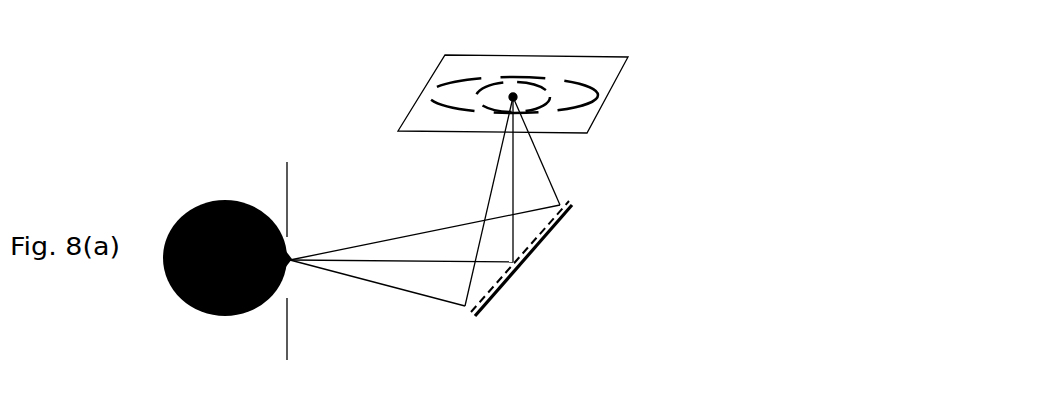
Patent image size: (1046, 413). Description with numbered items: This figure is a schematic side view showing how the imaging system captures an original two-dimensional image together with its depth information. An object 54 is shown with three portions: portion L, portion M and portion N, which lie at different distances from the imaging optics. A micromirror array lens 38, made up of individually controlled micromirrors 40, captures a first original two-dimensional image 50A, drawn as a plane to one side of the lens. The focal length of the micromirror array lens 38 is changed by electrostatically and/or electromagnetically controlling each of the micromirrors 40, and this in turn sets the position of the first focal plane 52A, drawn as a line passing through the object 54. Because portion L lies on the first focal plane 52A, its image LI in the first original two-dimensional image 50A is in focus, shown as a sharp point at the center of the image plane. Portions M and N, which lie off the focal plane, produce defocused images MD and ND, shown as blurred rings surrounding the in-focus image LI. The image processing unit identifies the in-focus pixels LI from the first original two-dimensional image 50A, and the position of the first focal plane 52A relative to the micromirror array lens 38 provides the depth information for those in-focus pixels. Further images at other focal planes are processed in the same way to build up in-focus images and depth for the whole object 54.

The object 54 is at (208, 193).
The first focal plane 52A is at (285, 243).
The portion of the object L is at (297, 247).
The portion of the object N is at (222, 320).
The portion of the object M is at (260, 307).
The micromirror array lens 38 is at (510, 297).
The micromirrors 40 is at (463, 312).
The first original two-dimensional image 50A is at (617, 118).
The defocused image of portion M MD is at (522, 88).
The defocused image of portion N ND is at (577, 82).
The in-focus image LI is at (505, 95).